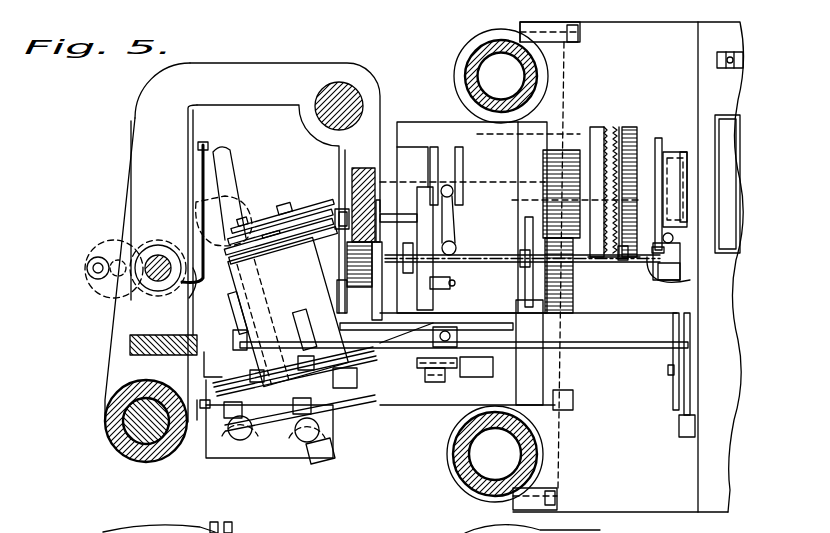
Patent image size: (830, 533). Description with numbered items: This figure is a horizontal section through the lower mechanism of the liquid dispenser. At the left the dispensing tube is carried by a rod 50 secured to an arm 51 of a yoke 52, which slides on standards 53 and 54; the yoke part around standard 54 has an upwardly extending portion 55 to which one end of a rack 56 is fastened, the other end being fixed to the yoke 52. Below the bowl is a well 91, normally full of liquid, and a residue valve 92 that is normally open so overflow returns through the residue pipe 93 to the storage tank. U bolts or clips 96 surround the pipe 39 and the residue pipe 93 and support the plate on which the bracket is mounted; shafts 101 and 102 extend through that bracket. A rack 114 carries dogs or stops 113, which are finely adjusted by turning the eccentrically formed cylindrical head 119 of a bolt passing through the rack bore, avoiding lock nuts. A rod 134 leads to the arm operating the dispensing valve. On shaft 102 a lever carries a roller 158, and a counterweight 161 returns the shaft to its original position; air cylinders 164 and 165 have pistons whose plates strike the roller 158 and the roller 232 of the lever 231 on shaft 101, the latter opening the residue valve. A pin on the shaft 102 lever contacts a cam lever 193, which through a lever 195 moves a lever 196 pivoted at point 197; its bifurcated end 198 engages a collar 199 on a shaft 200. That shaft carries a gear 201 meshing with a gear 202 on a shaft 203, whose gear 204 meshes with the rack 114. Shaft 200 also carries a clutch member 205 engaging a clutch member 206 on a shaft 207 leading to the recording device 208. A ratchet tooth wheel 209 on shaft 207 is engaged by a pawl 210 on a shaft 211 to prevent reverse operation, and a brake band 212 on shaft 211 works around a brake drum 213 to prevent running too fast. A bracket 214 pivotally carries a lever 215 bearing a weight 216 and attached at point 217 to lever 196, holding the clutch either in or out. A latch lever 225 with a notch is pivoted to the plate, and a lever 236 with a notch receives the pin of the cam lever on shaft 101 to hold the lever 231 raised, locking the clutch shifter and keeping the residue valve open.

The pipe 39 is at (532, 452).
The rod 50 is at (157, 254).
The arm 51 is at (221, 76).
The yoke 52 is at (107, 345).
The standard 53 is at (333, 85).
The standard 54 is at (133, 421).
The upwardly extending portion 55 is at (115, 441).
The rack 56 is at (135, 340).
The well 91 is at (104, 531).
The residue valve 92 is at (643, 492).
The residue pipe 93 is at (540, 68).
The U bolts or clips 96 is at (480, 38).
The shaft 101 is at (210, 295).
The shaft 102 is at (350, 373).
The dogs or stops 113 is at (330, 196).
The rack 114 is at (360, 159).
The eccentrically formed cylindrical head 119 is at (312, 188).
The rod 134 is at (214, 532).
The roller 158 is at (292, 462).
The counterweight 161 is at (322, 456).
The air cylinder 164 is at (287, 447).
The air cylinder 165 is at (239, 452).
The cam lever 193 is at (296, 373).
The lever 195 is at (415, 351).
The lever 196 is at (445, 306).
The pivot point 197 is at (456, 245).
The bifurcated end 198 is at (446, 170).
The collar 199 is at (460, 183).
The shaft 200 is at (468, 183).
The gear 201 is at (553, 150).
The gear 202 is at (562, 352).
The shaft 203 is at (466, 275).
The gear 204 is at (328, 273).
The clutch member 205 is at (595, 127).
The clutch member 206 is at (616, 127).
The shaft 207 is at (693, 206).
The recording device 208 is at (733, 90).
The ratchet tooth wheel 209 is at (631, 128).
The pawl 210 is at (625, 256).
The shaft 211 is at (691, 280).
The brake band 212 is at (672, 172).
The brake drum 213 is at (680, 153).
The bracket 214 is at (435, 420).
The lever 215 is at (484, 411).
The weight 216 is at (472, 370).
The attachment point 217 is at (436, 375).
The latch lever 225 is at (204, 404).
The lever 231 is at (242, 343).
The roller 232 is at (270, 450).
The lever 236 is at (208, 371).